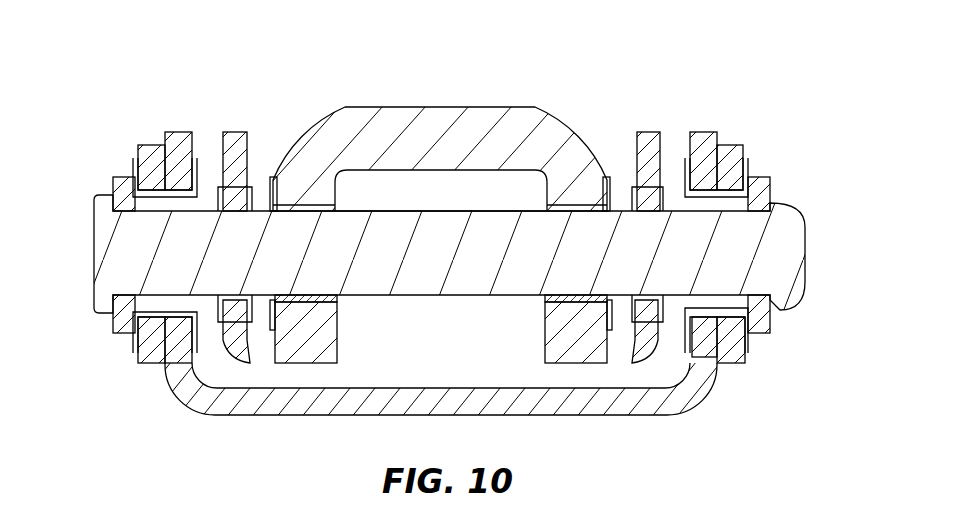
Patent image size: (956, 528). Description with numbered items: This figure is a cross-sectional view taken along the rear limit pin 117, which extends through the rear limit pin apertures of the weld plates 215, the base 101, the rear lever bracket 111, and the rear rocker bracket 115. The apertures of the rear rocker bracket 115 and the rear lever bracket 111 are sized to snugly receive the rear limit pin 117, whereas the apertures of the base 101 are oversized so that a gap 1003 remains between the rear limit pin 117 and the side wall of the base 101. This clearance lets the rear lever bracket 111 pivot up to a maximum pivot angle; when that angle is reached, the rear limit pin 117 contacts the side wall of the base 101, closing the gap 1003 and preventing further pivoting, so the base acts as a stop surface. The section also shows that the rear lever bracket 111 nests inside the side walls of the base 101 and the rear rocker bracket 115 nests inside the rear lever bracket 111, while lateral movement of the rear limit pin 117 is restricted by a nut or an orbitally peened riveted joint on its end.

The base 101 is at (178, 140).
The rear lever bracket 111 is at (235, 135).
The rear rocker bracket 115 is at (535, 157).
The rear limit pin 117 is at (762, 250).
The weld plates 215 is at (138, 145).
The gap 1003 is at (160, 305).